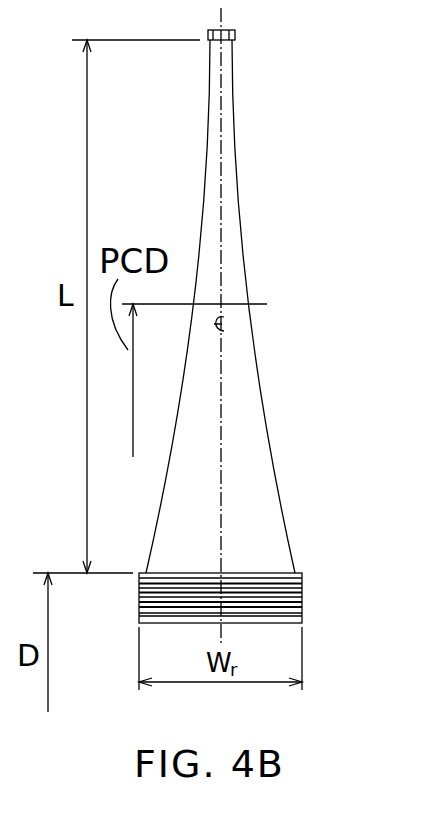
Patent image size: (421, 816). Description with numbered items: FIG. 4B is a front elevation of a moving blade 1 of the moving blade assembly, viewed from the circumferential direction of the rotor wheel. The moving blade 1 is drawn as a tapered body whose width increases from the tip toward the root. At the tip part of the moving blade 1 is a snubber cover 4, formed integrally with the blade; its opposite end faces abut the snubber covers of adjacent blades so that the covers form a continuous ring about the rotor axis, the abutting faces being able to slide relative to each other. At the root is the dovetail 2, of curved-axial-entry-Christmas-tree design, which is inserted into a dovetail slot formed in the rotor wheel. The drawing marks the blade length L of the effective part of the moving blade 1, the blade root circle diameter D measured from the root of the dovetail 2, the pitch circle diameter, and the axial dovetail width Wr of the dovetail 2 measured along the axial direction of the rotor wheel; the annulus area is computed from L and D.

The moving blade 1 is at (237, 236).
The dovetail 2 is at (297, 591).
The snubber cover 4 is at (236, 33).